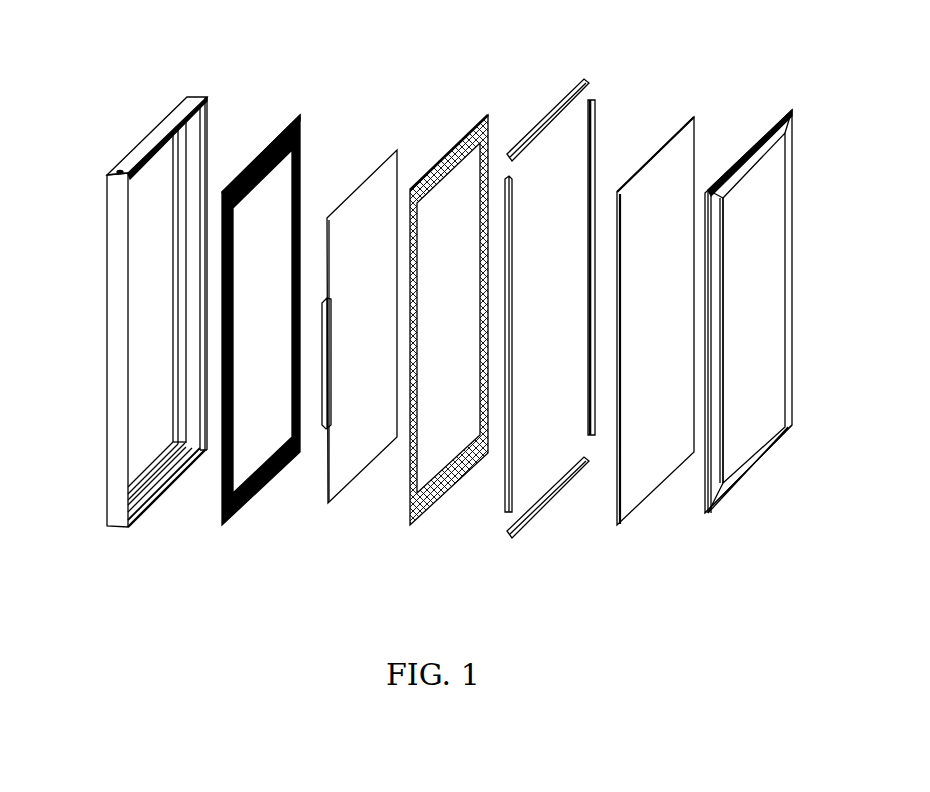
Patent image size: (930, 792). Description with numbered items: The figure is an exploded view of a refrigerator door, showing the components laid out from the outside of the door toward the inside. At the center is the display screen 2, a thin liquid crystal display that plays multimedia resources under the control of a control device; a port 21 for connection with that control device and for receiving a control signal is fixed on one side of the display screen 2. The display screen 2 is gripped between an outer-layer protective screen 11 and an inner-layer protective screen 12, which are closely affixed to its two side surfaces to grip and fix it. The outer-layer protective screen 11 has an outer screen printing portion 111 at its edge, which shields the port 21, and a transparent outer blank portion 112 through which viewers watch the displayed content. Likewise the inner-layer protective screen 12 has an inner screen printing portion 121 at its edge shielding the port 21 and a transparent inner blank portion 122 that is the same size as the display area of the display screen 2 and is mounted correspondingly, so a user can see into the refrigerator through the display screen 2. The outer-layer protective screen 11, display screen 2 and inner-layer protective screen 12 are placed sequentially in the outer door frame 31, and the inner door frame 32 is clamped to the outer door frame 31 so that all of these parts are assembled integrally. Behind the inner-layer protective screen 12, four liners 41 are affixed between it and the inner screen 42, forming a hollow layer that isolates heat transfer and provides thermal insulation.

The outer door frame 31 is at (150, 417).
The outer-layer protective screen 11 is at (243, 418).
The outer screen printing portion 111 is at (283, 137).
The outer blank portion 112 is at (262, 313).
The display screen 2 is at (355, 423).
The port 21 is at (322, 303).
The inner-layer protective screen 12 is at (445, 425).
The inner screen printing portion 121 is at (481, 135).
The inner blank portion 122 is at (448, 250).
The liners 41 is at (590, 433).
The inner screen 42 is at (670, 423).
The inner door frame 32 is at (747, 423).